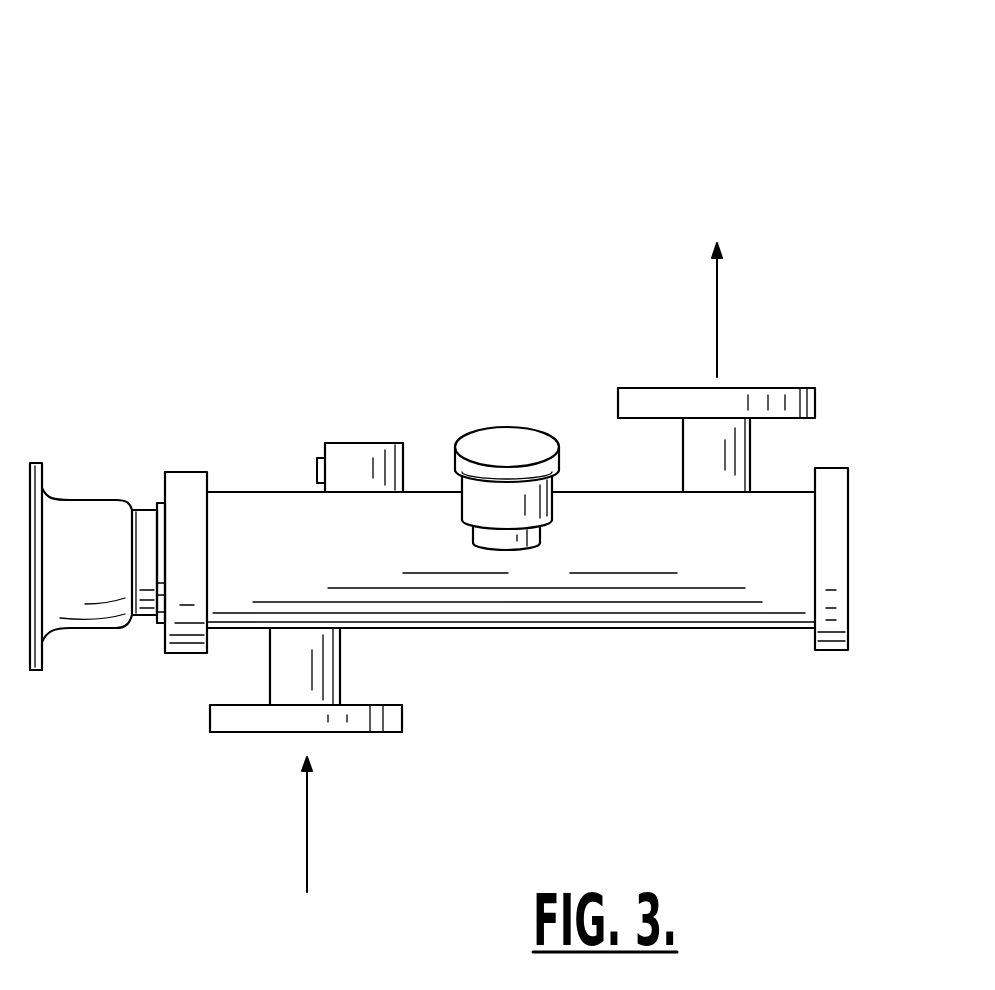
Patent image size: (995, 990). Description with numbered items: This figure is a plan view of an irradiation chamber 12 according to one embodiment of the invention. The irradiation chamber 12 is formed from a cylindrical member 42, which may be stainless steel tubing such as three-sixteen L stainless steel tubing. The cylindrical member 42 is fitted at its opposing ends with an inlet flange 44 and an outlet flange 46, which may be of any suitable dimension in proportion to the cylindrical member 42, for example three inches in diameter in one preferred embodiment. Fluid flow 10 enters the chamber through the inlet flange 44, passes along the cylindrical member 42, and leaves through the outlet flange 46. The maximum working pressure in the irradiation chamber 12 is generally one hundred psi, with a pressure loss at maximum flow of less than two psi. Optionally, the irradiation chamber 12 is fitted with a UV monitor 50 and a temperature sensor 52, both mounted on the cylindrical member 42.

The fluid inlet flow 10 is at (307, 828).
The irradiation chamber 12 is at (336, 134).
The cylindrical member 42 is at (613, 617).
The inlet flange 44 is at (283, 685).
The outlet flange 46 is at (743, 442).
The UV monitor 50 is at (505, 450).
The temperature sensor 52 is at (355, 442).